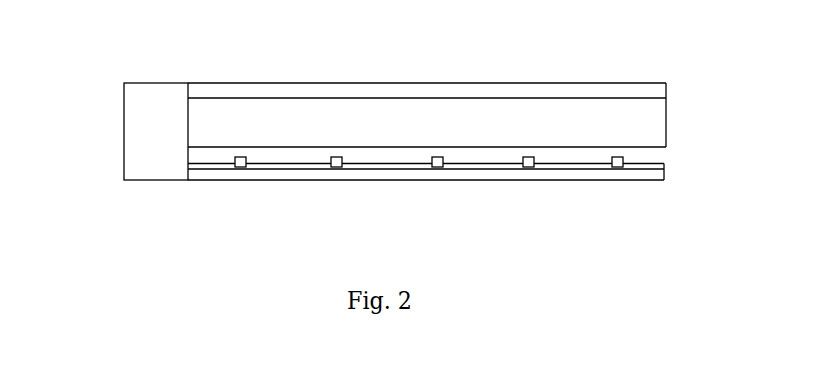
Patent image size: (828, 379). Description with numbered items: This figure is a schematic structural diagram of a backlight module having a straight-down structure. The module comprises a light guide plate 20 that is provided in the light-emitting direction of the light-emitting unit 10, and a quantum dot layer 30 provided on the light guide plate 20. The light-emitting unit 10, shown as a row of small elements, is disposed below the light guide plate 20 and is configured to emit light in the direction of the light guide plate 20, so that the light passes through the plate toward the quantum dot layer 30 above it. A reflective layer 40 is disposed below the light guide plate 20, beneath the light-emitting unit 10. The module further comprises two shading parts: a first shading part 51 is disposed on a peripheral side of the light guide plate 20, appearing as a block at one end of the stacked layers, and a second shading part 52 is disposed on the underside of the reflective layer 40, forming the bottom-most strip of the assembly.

The light-emitting unit 10 is at (530, 164).
The light guide plate 20 is at (332, 117).
The quantum dot layer 30 is at (463, 90).
The reflective layer 40 is at (469, 168).
The first shading part 51 is at (140, 137).
The second shading part 52 is at (292, 172).